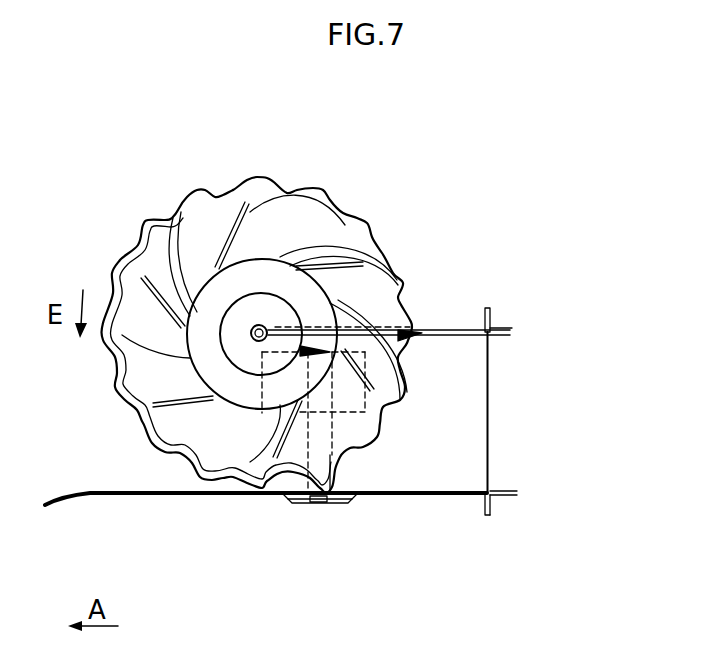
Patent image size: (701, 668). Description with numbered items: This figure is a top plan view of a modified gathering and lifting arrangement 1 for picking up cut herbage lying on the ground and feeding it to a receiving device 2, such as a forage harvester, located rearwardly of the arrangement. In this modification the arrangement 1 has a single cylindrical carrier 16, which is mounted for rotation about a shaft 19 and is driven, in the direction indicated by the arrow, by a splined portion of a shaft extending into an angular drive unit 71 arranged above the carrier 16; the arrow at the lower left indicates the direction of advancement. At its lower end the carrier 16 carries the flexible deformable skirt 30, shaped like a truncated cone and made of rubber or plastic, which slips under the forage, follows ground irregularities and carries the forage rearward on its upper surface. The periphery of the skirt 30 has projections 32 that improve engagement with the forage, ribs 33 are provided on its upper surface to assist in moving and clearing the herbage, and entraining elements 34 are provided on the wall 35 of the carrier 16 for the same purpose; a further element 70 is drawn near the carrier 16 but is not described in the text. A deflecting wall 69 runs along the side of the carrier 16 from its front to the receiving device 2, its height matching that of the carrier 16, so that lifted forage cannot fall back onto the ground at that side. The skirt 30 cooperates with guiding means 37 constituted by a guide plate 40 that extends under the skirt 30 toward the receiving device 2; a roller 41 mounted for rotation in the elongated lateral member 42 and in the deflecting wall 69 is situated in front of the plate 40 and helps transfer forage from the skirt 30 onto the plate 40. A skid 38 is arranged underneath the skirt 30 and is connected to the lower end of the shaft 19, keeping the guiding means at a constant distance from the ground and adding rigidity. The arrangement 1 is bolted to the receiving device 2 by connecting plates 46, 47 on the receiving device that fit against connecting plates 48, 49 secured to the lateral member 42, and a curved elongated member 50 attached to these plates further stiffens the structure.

The gathering and lifting arrangement 1 is at (130, 237).
The receiving device 2 is at (507, 328).
The cylindrical carrier 16 is at (215, 286).
The shaft 19 is at (251, 333).
The flexible deformable skirt 30 is at (147, 372).
The projections 32 is at (261, 181).
The ribs 33 is at (287, 200).
The entraining elements 34 is at (247, 203).
The wall 35 is at (280, 257).
The guiding means 37 is at (498, 366).
The skid 38 is at (362, 408).
The guide plate 40 is at (465, 408).
The roller 41 is at (308, 505).
The elongated lateral member 42 is at (420, 340).
The connecting plate 46 is at (490, 327).
The connecting plate 47 is at (494, 510).
The connecting plate 48 is at (485, 308).
The connecting plate 49 is at (486, 508).
The curved elongated member 50 is at (407, 332).
The deflecting wall 69 is at (183, 495).
The blade 70 is at (330, 354).
The angular drive unit 71 is at (297, 327).